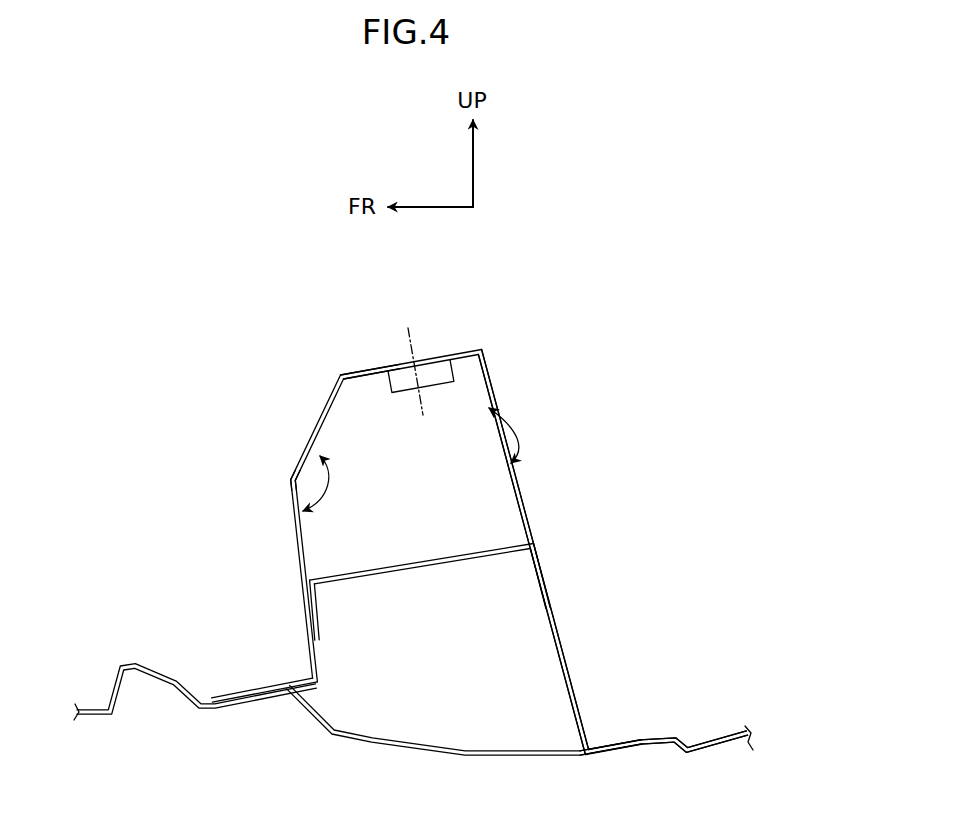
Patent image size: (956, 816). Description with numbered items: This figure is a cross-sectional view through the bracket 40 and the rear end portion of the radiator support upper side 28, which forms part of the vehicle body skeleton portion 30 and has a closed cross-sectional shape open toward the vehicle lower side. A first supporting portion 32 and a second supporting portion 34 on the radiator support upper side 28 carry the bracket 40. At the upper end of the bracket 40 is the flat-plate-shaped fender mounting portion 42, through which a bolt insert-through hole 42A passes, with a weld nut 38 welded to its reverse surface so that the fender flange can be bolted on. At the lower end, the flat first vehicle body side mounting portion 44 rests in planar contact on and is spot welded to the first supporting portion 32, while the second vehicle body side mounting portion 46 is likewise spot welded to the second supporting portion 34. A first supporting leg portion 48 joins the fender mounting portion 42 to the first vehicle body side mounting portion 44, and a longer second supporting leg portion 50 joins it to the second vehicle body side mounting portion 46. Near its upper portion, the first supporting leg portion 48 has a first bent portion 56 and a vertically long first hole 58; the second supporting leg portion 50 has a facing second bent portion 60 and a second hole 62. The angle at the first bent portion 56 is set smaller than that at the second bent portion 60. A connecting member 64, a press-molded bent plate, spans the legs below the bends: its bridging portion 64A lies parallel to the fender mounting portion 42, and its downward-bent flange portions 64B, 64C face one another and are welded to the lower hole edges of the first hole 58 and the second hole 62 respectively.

The radiator support upper side 28 is at (708, 726).
The vehicle body skeleton portion 30 is at (745, 690).
The first supporting portion 32 is at (232, 688).
The second supporting portion 34 is at (642, 740).
The weld nut 38 is at (388, 378).
The bracket 40 is at (652, 350).
The fender mounting portion 42 is at (450, 347).
The bolt insert-through hole 42A is at (393, 363).
The first vehicle body side mounting portion 44 is at (255, 688).
The second vehicle body side mounting portion 46 is at (628, 740).
The first supporting leg portion 48 is at (292, 553).
The second supporting leg portion 50 is at (570, 621).
The first bent portion 56 is at (288, 481).
The first hole 58 is at (296, 468).
The second bent portion 60 is at (516, 446).
The second hole 62 is at (514, 432).
The connecting member 64 is at (451, 582).
The bridging portion 64A is at (398, 564).
The flange portion 64B is at (321, 606).
The flange portion 64C is at (542, 594).